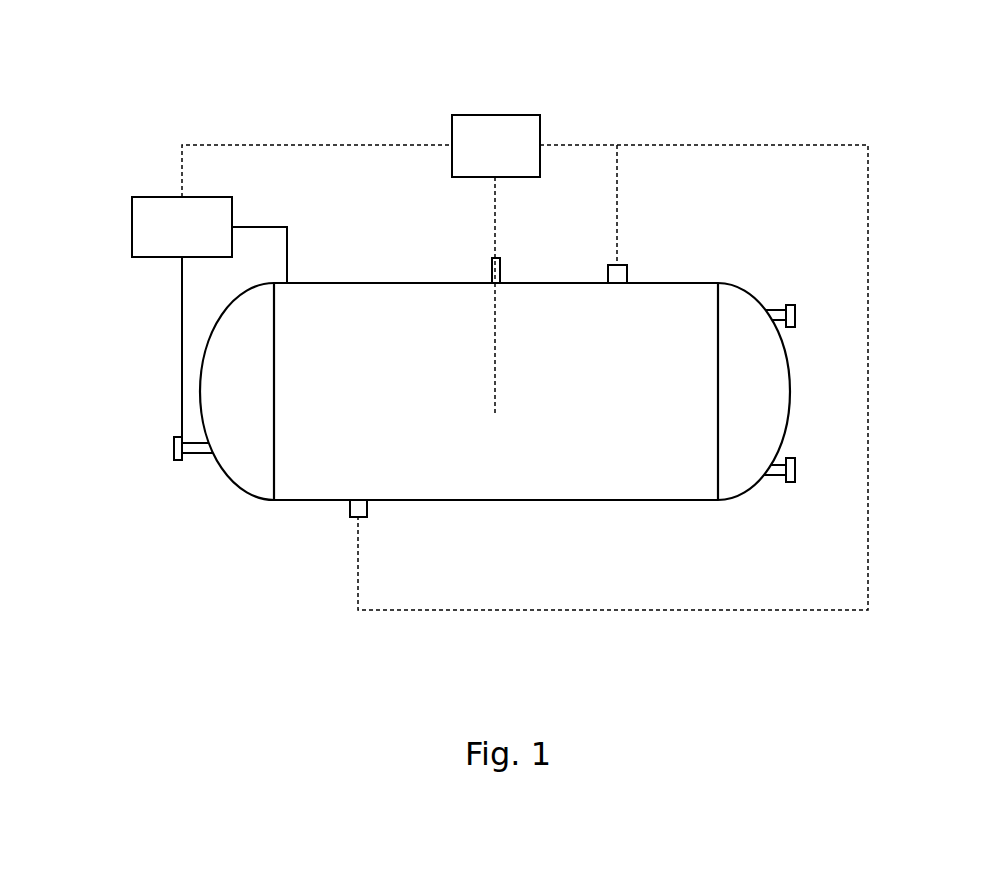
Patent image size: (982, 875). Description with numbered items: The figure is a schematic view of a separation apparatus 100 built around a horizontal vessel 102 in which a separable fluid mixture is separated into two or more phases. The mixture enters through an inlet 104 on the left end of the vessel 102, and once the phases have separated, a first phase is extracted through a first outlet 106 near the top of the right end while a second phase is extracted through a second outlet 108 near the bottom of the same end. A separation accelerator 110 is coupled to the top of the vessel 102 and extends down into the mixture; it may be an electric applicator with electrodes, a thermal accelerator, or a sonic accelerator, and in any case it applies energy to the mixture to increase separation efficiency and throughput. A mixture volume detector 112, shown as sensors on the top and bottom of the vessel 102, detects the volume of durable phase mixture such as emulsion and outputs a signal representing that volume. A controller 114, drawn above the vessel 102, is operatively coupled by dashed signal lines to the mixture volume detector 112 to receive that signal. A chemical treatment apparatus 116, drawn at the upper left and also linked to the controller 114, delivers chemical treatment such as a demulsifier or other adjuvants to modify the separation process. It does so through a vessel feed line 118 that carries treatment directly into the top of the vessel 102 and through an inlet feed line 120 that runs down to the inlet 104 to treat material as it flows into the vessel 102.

The separation apparatus 100 is at (638, 59).
The vessel 102 is at (247, 500).
The inlet 104 is at (173, 450).
The first outlet 106 is at (787, 305).
The second outlet 108 is at (784, 482).
The separation accelerator 110 is at (492, 258).
The mixture volume detector 112 is at (627, 273).
The controller 114 is at (525, 362).
The chemical treatment apparatus 116 is at (182, 227).
The vessel feed line 118 is at (288, 247).
The inlet feed line 120 is at (180, 365).